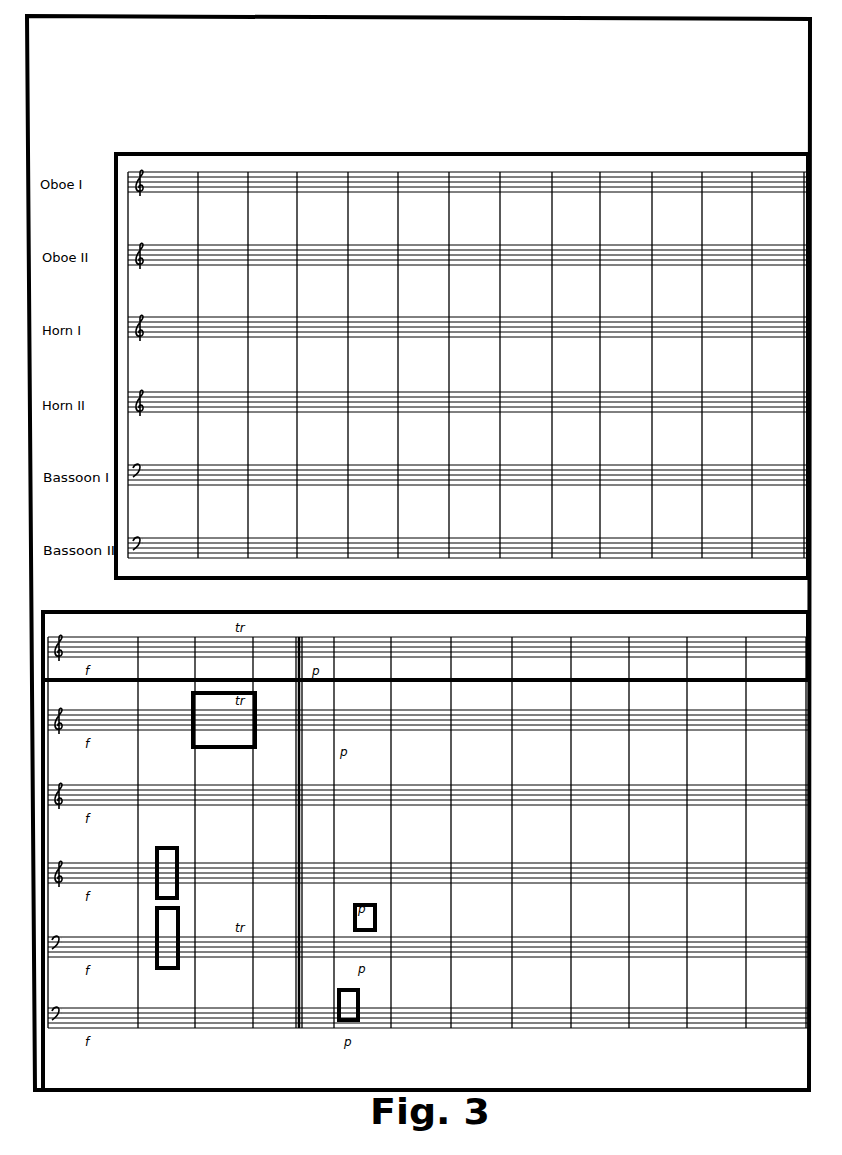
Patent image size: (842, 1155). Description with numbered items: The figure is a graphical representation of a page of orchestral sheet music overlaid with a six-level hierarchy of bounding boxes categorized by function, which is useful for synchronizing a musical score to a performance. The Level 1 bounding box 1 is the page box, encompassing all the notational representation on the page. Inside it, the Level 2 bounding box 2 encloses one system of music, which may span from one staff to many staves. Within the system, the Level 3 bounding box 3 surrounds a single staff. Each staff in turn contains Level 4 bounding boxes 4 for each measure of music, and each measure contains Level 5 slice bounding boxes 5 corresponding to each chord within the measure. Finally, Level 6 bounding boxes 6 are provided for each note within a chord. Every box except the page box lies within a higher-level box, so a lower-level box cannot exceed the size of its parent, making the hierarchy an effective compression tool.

The Level 1 bounding box 1 is at (150, 17).
The Level 2 bounding box 2 is at (188, 153).
The Level 3 bounding box 3 is at (103, 613).
The Level 4 bounding box 4 is at (193, 742).
The Level 5 bounding box 5 is at (157, 857).
The Level 6 bounding box 6 is at (355, 928).